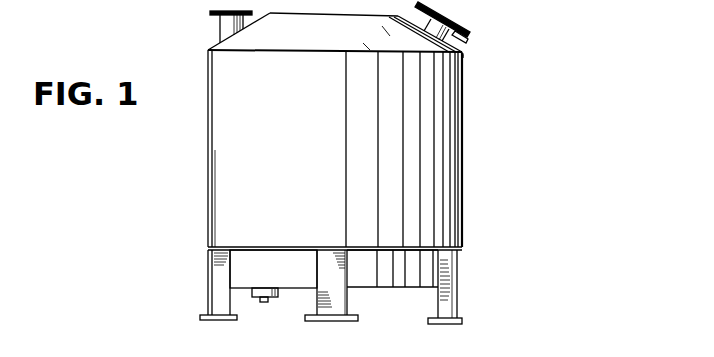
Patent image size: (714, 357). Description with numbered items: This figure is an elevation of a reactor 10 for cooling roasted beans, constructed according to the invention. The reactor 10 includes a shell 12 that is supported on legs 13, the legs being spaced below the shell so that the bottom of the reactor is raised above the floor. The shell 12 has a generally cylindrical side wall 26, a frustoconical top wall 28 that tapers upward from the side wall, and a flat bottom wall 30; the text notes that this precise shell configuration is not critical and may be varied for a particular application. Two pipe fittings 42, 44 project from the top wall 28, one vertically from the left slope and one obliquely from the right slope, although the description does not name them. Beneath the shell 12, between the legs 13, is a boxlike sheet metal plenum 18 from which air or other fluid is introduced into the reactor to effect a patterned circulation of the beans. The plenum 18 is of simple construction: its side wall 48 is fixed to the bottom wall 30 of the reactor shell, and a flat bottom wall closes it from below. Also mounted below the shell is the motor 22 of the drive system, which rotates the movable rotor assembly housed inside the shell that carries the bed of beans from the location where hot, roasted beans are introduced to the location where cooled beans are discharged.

The reactor 10 is at (500, 40).
The shell 12 is at (456, 152).
The legs 13 is at (211, 293).
The plenum 18 is at (230, 264).
The motor 22 is at (278, 299).
The side wall 26 is at (344, 89).
The top wall 28 is at (352, 14).
The bottom wall 30 is at (441, 253).
The inlet pipe 42 is at (220, 23).
The vent pipe 44 is at (452, 24).
The side wall 48 is at (290, 277).